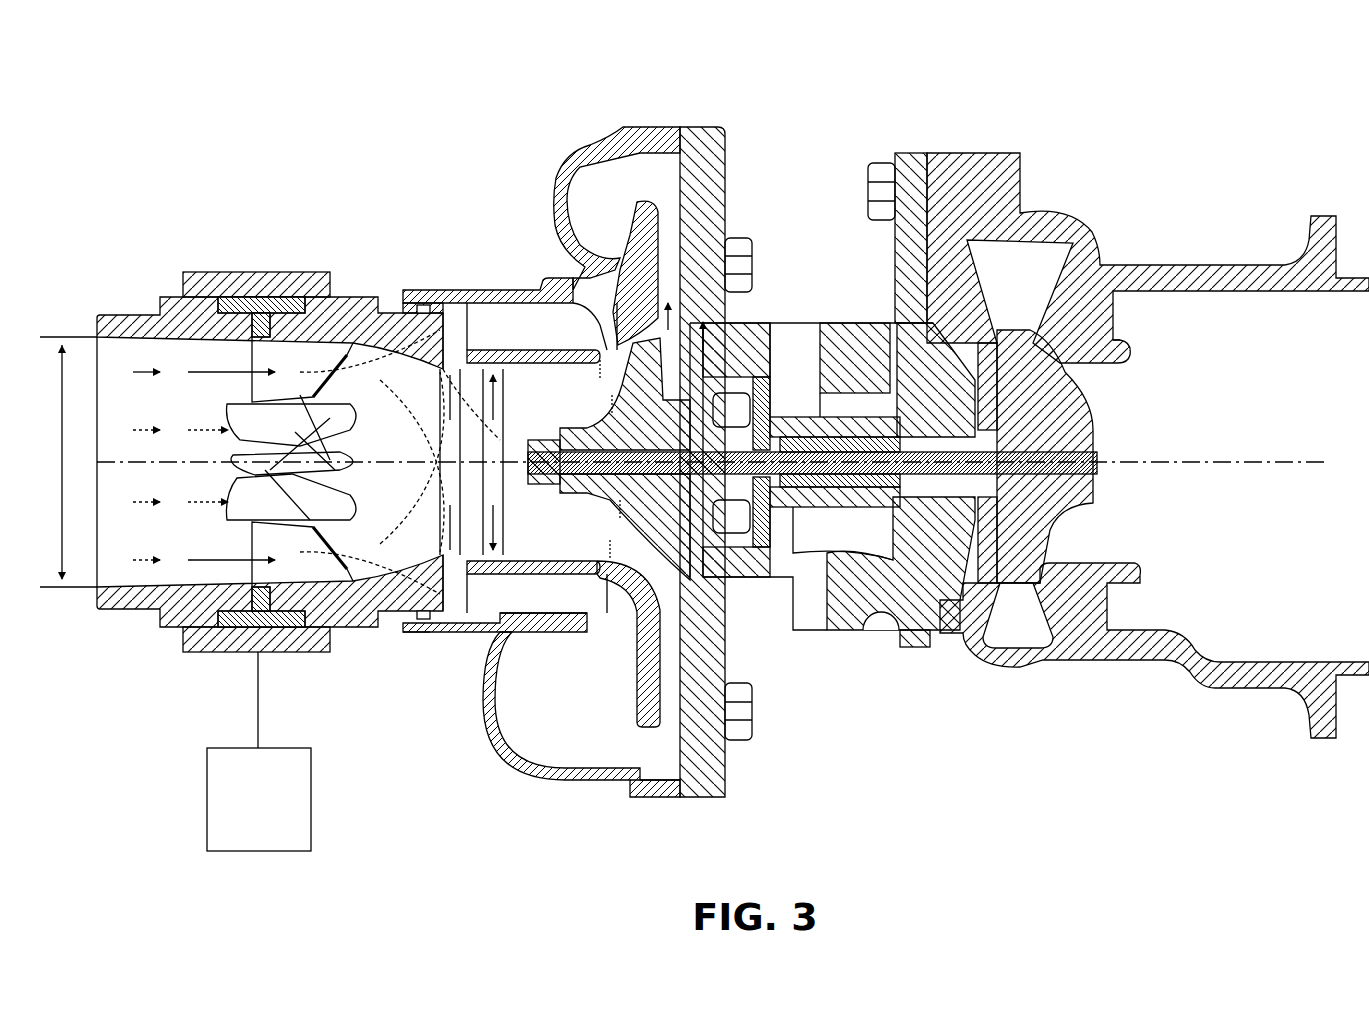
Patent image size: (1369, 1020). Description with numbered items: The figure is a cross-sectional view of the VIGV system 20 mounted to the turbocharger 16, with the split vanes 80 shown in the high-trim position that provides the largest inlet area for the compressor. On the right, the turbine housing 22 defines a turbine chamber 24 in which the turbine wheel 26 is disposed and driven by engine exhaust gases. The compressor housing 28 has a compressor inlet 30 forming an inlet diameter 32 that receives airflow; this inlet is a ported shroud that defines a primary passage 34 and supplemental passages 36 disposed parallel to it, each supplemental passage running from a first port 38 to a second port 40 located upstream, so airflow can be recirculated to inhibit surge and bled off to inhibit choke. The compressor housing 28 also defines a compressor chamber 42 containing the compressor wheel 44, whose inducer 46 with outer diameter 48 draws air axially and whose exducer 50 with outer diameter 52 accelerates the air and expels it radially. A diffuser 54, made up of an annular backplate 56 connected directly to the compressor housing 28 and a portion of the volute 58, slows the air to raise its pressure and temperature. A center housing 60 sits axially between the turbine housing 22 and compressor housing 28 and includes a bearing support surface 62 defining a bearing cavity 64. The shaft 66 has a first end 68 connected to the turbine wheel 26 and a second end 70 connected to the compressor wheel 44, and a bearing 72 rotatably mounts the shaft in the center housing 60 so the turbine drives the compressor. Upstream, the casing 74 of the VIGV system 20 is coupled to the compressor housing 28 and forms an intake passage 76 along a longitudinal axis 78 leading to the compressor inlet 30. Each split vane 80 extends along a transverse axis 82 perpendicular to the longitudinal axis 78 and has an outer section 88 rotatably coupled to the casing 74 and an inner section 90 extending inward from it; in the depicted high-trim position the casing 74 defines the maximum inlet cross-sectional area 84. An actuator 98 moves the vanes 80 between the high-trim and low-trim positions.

The turbocharger 16 is at (608, 80).
The VIGV system 20 is at (95, 272).
The turbine housing 22 is at (1075, 218).
The turbine chamber 24 is at (1088, 368).
The turbine wheel 26 is at (1095, 508).
The compressor housing 28 is at (528, 292).
The compressor inlet 30 is at (428, 636).
The inlet diameter 32 is at (445, 458).
The primary passage 34 is at (528, 615).
The supplemental passages 36 is at (552, 606).
The first port 38 is at (603, 612).
The second port 40 is at (462, 632).
The compressor chamber 42 is at (578, 290).
The compressor wheel 44 is at (672, 330).
The inducer 46 is at (612, 295).
The outer diameter of the inducer 48 is at (565, 432).
The exducer 50 is at (690, 330).
The outer diameter of the exducer 52 is at (770, 365).
The diffuser 54 is at (648, 790).
The annular backplate 56 is at (770, 632).
The volute 58 is at (590, 788).
The center housing 60 is at (918, 653).
The bearing support surface 62 is at (897, 345).
The bearing cavity 64 is at (820, 400).
The shaft 66 is at (1045, 485).
The first end of the shaft 68 is at (1108, 452).
The second end of the shaft 70 is at (440, 485).
The bearing 72 is at (815, 510).
The casing 74 is at (100, 614).
The intake passage 76 is at (131, 536).
The longitudinal axis 78 is at (110, 450).
The split vanes 80 is at (250, 365).
The transverse axis 82 is at (232, 272).
The maximum inlet cross-sectional area 84 is at (68, 462).
The outer section 88 is at (270, 300).
The inner section 90 is at (225, 430).
The actuator 98 is at (270, 851).